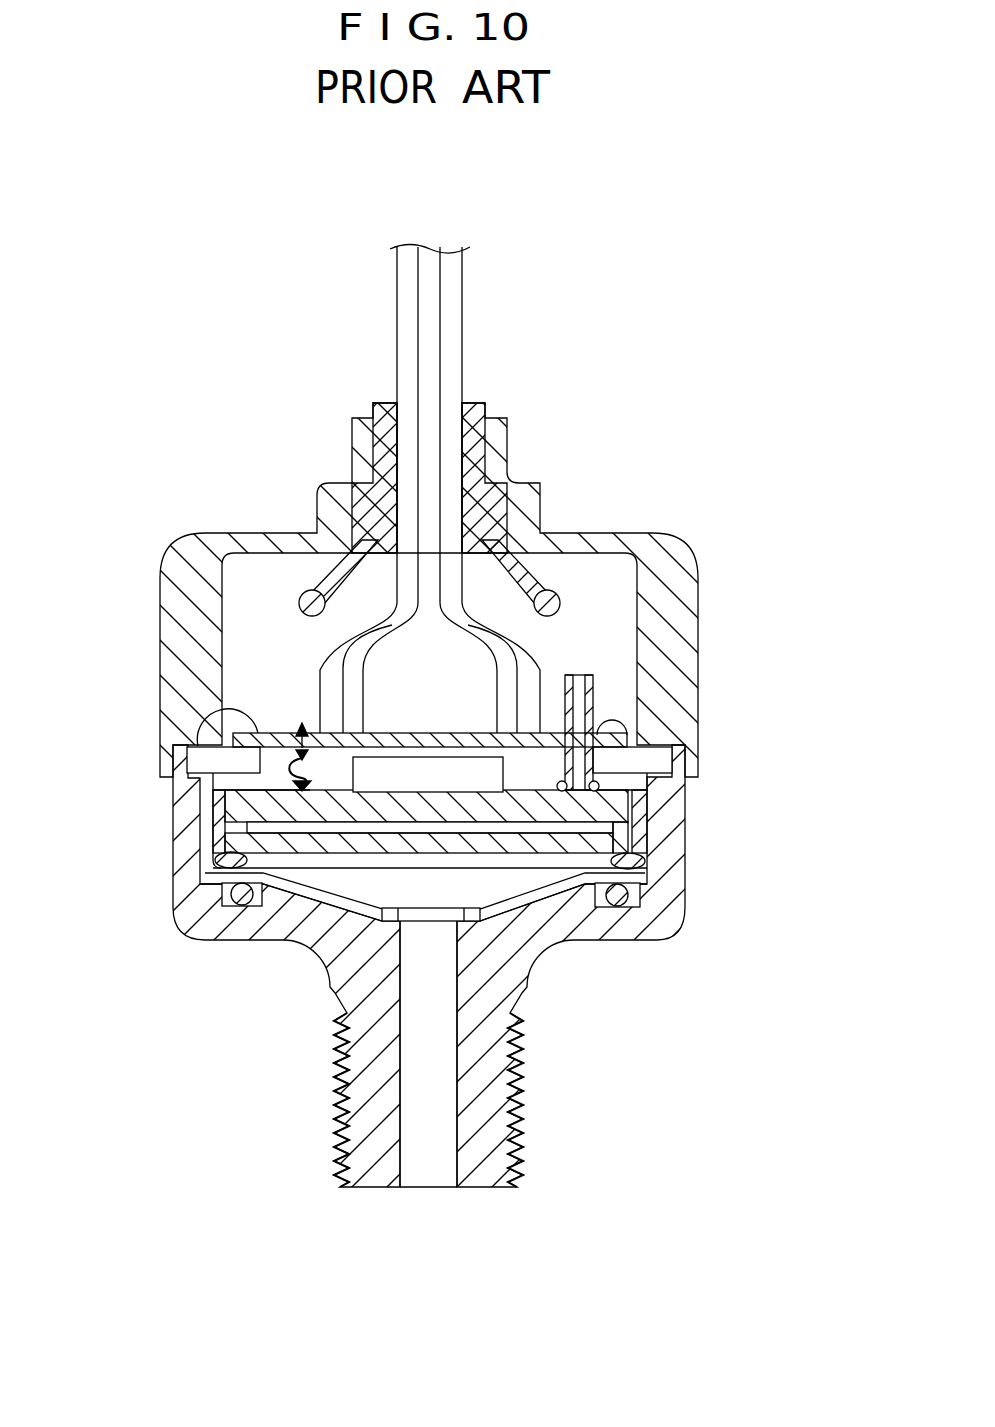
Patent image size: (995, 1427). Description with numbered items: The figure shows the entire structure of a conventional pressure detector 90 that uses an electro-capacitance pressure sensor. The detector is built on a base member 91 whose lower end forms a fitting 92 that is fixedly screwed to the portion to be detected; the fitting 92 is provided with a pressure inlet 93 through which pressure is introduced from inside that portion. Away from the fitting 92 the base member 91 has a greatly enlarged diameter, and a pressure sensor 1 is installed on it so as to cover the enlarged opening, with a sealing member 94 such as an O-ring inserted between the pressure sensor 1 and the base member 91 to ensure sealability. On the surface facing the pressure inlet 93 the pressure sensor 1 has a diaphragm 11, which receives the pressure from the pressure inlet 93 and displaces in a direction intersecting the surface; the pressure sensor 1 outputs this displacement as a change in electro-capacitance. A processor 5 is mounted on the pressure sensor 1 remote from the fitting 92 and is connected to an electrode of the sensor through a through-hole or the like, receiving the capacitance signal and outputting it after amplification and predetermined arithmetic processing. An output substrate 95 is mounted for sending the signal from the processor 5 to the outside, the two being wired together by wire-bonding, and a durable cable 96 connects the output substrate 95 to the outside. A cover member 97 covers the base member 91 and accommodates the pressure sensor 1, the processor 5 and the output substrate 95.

The pressure detector 90 is at (716, 408).
The cover member 97 is at (605, 535).
The base member 91 is at (227, 942).
The fitting 92 is at (522, 1060).
The pressure inlet 93 is at (430, 1142).
The diaphragm 11 is at (390, 842).
The pressure sensor 1 is at (238, 818).
The processor 5 is at (457, 767).
The sealing member 94 is at (643, 915).
The output substrate 95 is at (397, 735).
The cable 96 is at (397, 330).